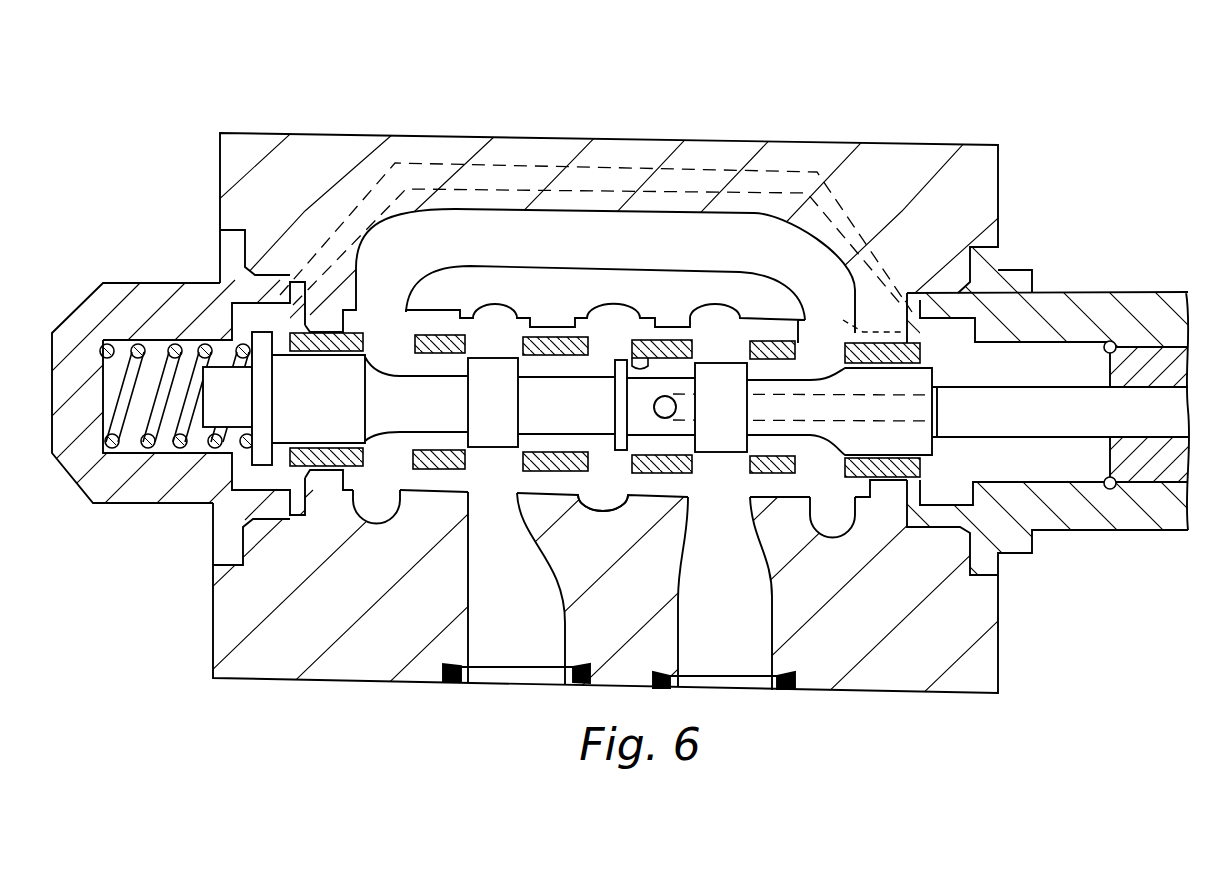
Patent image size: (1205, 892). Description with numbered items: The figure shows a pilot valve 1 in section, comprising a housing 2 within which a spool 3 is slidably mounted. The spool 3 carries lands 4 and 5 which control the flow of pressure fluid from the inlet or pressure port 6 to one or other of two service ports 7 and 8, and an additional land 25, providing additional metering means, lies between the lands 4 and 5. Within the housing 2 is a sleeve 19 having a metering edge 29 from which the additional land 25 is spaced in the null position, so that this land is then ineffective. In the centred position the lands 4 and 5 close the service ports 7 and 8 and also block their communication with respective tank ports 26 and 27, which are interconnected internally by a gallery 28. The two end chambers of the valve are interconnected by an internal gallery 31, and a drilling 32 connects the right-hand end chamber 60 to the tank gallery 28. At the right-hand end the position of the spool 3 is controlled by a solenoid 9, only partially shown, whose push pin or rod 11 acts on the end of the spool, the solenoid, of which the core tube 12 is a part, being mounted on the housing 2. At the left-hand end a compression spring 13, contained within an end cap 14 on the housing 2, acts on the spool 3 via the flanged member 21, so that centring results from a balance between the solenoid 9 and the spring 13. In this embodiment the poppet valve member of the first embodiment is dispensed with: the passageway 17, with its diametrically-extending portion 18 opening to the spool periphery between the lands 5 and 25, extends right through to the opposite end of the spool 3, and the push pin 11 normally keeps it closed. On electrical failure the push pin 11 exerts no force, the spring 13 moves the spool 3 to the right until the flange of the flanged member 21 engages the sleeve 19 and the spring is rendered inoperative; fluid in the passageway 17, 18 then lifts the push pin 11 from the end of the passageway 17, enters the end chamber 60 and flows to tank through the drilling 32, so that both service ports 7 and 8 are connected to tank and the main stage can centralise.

The pilot valve 1 is at (594, 404).
The housing 2 is at (800, 152).
The spool 3 is at (553, 375).
The land 4 is at (492, 440).
The land 5 is at (726, 446).
The inlet or pressure port 6 is at (603, 508).
The service port 7 is at (527, 621).
The service port 8 is at (733, 624).
The solenoid 9 is at (1148, 365).
The push pin or rod 11 is at (1013, 432).
The core tube 12 is at (901, 399).
The compression spring 13 is at (168, 445).
The end cap 14 is at (80, 473).
The passageway 17 is at (730, 428).
The diametrically-extending portion 18 is at (676, 406).
The sleeve 19 is at (443, 345).
The flanged member 21 is at (265, 462).
The additional land 25 is at (618, 452).
The tank port 26 is at (378, 512).
The tank port 27 is at (830, 520).
The gallery 28 is at (637, 256).
The metering edge 29 is at (652, 368).
The internal gallery 31 is at (620, 170).
The drilling 32 is at (857, 319).
The end chamber 60 is at (958, 338).